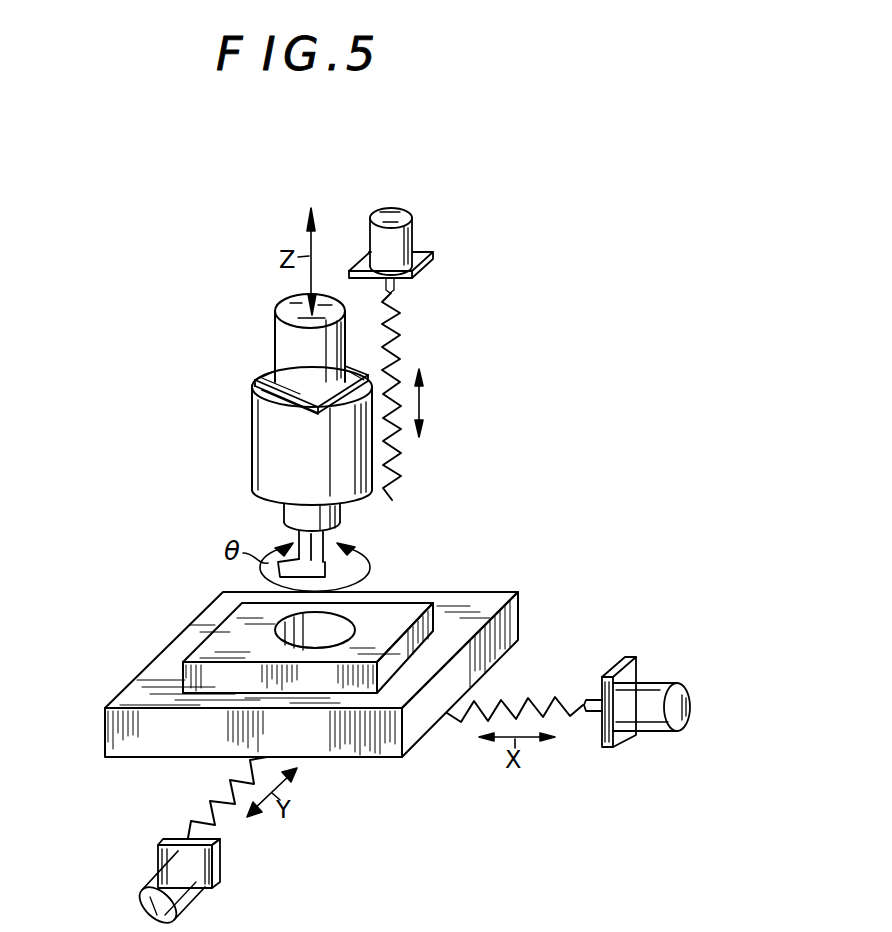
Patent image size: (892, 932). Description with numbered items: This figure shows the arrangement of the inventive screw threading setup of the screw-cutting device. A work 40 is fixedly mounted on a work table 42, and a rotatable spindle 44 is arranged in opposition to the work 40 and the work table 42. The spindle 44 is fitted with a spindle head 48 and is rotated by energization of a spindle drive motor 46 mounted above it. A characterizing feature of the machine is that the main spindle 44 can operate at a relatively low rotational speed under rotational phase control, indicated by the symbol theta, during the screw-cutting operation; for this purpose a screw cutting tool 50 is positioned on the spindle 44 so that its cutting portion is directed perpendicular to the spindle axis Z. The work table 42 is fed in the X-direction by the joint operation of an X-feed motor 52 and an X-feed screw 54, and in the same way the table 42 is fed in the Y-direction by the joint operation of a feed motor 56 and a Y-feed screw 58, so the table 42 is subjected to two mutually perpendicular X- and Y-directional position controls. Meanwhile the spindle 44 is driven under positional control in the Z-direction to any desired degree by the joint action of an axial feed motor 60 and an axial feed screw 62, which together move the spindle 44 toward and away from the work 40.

The work 40 is at (402, 608).
The work table 42 is at (483, 600).
The spindle 44 is at (290, 517).
The spindle drive motor 46 is at (288, 352).
The spindle head 48 is at (275, 462).
The screw cutting tool 50 is at (332, 548).
The X-feed motor 52 is at (652, 690).
The X-feed screw 54 is at (537, 692).
The feed motor 56 is at (183, 893).
The Y-feed screw 58 is at (230, 820).
The axial feed motor 60 is at (400, 243).
The axial feed screw 62 is at (392, 345).